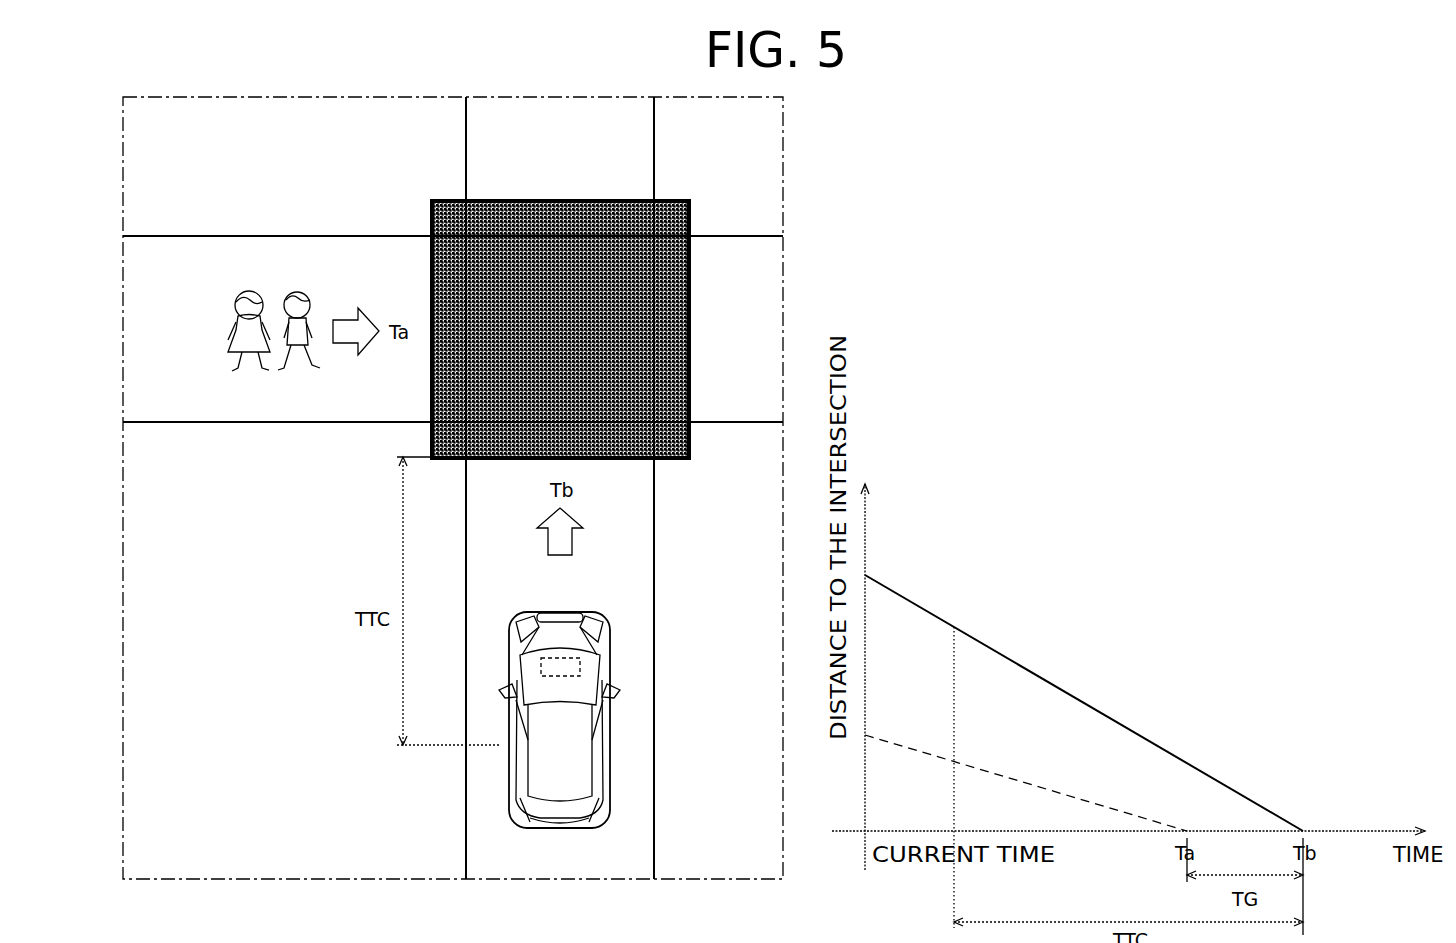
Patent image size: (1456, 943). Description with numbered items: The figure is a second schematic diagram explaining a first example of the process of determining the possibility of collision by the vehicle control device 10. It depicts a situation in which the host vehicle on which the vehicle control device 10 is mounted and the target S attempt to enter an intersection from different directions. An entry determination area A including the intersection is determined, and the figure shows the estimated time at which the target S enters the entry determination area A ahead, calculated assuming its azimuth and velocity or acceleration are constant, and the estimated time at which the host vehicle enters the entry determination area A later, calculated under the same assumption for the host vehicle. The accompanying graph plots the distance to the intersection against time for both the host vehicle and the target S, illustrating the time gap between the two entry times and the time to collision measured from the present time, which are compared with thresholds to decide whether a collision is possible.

The vehicle control device 10 is at (583, 664).
The entry determination area A is at (577, 201).
The target S is at (255, 282).